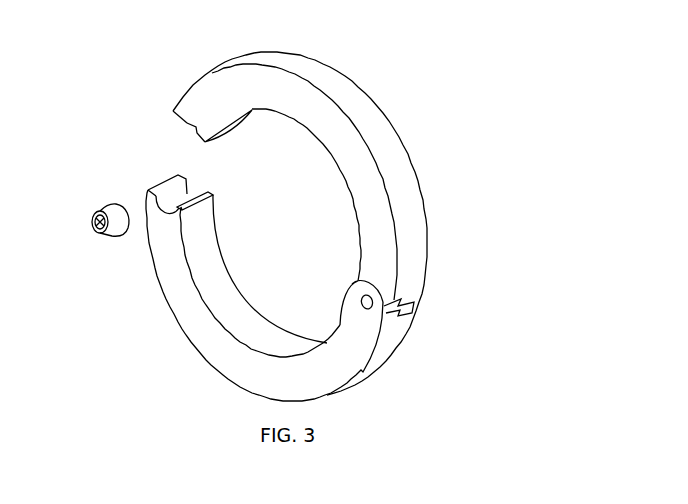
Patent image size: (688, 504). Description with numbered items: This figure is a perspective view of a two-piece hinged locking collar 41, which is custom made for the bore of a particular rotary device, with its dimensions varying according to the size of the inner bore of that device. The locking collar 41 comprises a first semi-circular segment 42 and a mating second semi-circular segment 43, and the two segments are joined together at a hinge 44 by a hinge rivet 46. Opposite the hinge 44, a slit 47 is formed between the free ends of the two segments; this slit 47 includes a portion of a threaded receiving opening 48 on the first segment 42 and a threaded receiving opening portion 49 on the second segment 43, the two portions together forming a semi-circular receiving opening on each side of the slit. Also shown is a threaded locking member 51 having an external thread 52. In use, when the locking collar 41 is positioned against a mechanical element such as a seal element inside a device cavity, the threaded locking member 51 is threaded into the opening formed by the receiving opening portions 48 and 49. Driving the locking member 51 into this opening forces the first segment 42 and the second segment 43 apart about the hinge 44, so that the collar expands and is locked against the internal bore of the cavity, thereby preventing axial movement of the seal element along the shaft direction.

The two-piece locking collar 41 is at (310, 211).
The first semi-circular segment 42 is at (298, 65).
The second semi-circular segment 43 is at (271, 278).
The hinge 44 is at (418, 300).
The hinge rivet 46 is at (372, 313).
The slit 47 is at (162, 180).
The threaded receiving opening 48 is at (186, 124).
The threaded receiving opening portion 49 is at (190, 195).
The threaded locking member 51 is at (73, 228).
The external thread 52 is at (103, 233).